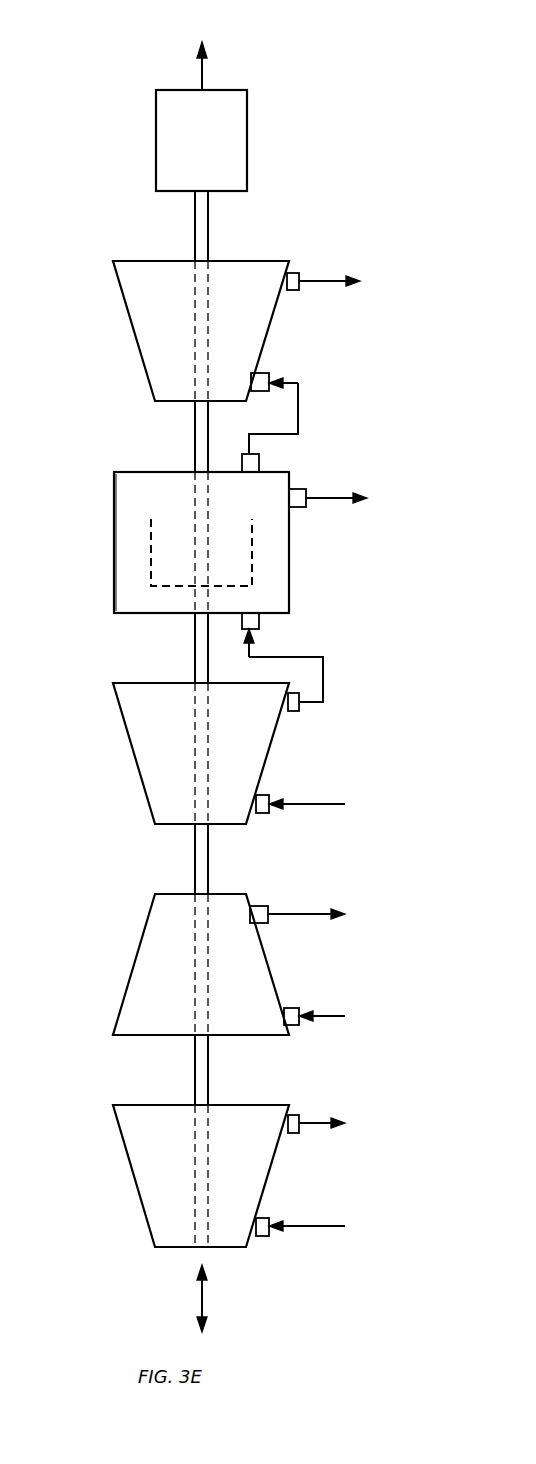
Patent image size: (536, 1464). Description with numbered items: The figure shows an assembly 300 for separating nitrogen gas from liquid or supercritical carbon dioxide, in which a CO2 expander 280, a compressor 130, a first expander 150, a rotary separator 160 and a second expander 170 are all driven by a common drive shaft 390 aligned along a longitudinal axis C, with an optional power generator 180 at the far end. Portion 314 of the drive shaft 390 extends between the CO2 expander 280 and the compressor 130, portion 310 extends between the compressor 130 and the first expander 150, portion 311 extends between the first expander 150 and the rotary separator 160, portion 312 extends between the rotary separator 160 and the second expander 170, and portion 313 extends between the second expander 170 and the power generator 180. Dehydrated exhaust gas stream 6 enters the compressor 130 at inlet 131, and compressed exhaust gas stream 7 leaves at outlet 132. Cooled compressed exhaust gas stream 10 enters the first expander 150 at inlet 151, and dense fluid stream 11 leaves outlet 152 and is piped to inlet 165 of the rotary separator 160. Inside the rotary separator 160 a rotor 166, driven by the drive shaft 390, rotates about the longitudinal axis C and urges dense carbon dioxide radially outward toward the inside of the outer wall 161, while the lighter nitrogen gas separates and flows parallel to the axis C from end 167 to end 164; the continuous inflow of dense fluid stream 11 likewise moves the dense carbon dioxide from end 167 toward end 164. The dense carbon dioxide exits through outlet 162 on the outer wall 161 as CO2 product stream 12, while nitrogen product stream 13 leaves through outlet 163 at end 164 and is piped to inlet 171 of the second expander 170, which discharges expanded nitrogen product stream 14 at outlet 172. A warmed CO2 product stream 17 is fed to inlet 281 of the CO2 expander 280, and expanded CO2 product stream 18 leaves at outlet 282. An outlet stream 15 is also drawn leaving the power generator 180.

The assembly 300 is at (116, 26).
The power generator 180 is at (178, 90).
The overhead outlet stream 15 is at (203, 72).
The portion of drive shaft 313 is at (195, 228).
The second expander 170 is at (134, 332).
The outlet 172 is at (299, 291).
The expanded nitrogen product stream 14 is at (319, 279).
The inlet 171 is at (270, 374).
The nitrogen product stream 13 is at (299, 412).
The portion of drive shaft 312 is at (195, 430).
The outlet 163 is at (260, 458).
The end 164 is at (150, 472).
The rotary separator 160 is at (114, 563).
The outer wall 161 is at (116, 524).
The outlet 162 is at (306, 507).
The CO2 product stream 12 is at (334, 496).
The rotor 166 is at (252, 552).
The end 167 is at (152, 613).
The inlet 165 is at (260, 626).
The dense fluid stream 11 is at (324, 673).
The portion of drive shaft 311 is at (195, 654).
The first expander 150 is at (134, 757).
The outlet 152 is at (298, 711).
The inlet 151 is at (262, 813).
The cooled compressed exhaust gas stream 10 is at (310, 803).
The portion of drive shaft 310 is at (195, 855).
The drive shaft 390 is at (208, 856).
The compressor 130 is at (136, 954).
The outlet 132 is at (269, 923).
The compressed exhaust gas stream 7 is at (307, 912).
The inlet 131 is at (299, 1008).
The dehydrated exhaust gas stream 6 is at (325, 1018).
The portion of drive shaft 314 is at (195, 1072).
The CO2 expander 280 is at (136, 1190).
The outlet 282 is at (298, 1133).
The expanded CO2 product stream 18 is at (311, 1121).
The inlet 281 is at (273, 1218).
The warmed CO2 product stream 17 is at (310, 1226).
The longitudinal axis C is at (203, 1298).